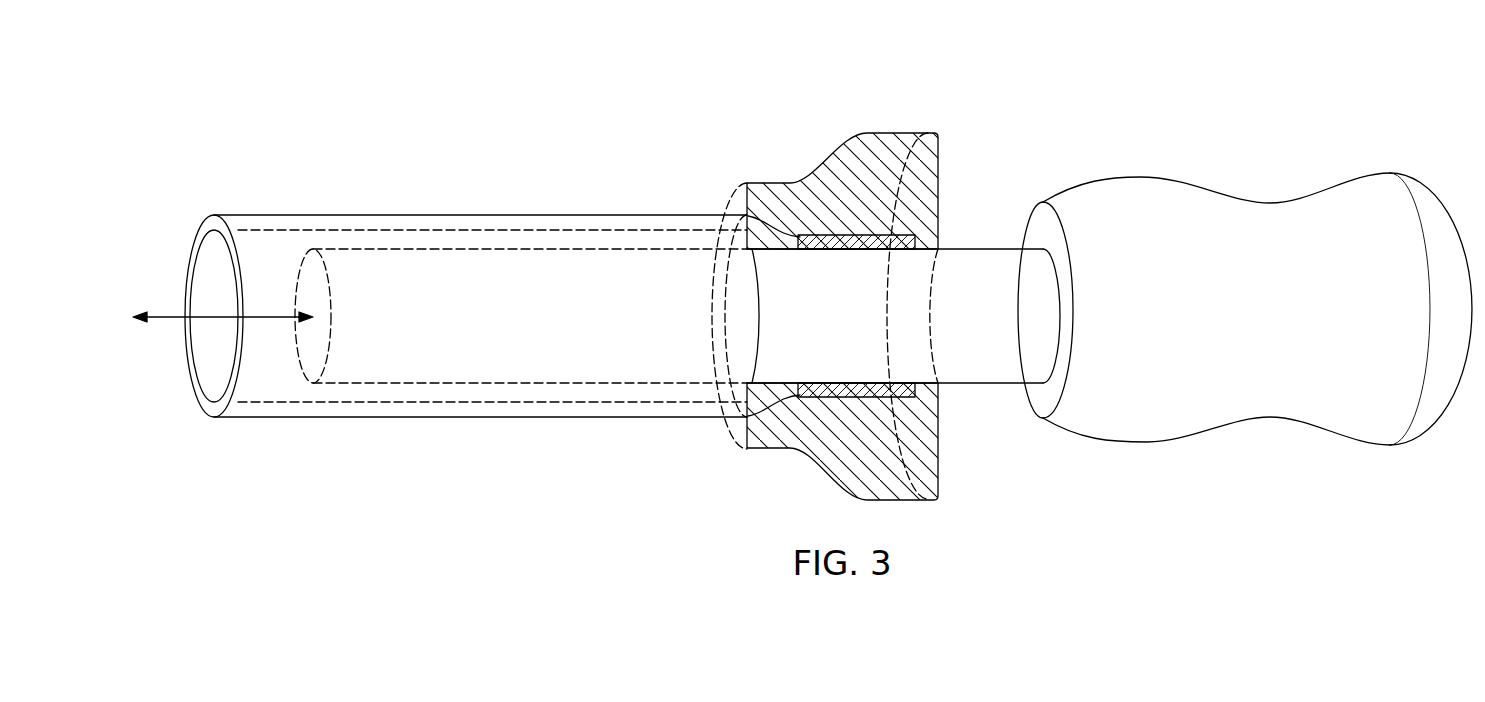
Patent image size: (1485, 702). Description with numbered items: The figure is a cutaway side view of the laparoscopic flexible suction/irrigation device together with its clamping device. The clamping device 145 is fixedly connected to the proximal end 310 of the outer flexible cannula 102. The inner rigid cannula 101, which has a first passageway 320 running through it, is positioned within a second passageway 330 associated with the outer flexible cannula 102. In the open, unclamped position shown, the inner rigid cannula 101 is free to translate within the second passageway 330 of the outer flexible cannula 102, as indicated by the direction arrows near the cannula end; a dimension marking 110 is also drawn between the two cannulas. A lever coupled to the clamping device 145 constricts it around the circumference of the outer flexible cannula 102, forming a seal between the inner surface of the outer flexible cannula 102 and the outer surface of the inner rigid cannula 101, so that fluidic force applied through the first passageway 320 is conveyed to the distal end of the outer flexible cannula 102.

The inner rigid cannula 101 is at (379, 383).
The outer flexible cannula 102 is at (605, 215).
The gap 110 is at (437, 295).
The clamping device 145 is at (852, 475).
The proximal end 310 is at (818, 405).
The first passageway 320 is at (519, 332).
The second passageway 330 is at (218, 353).